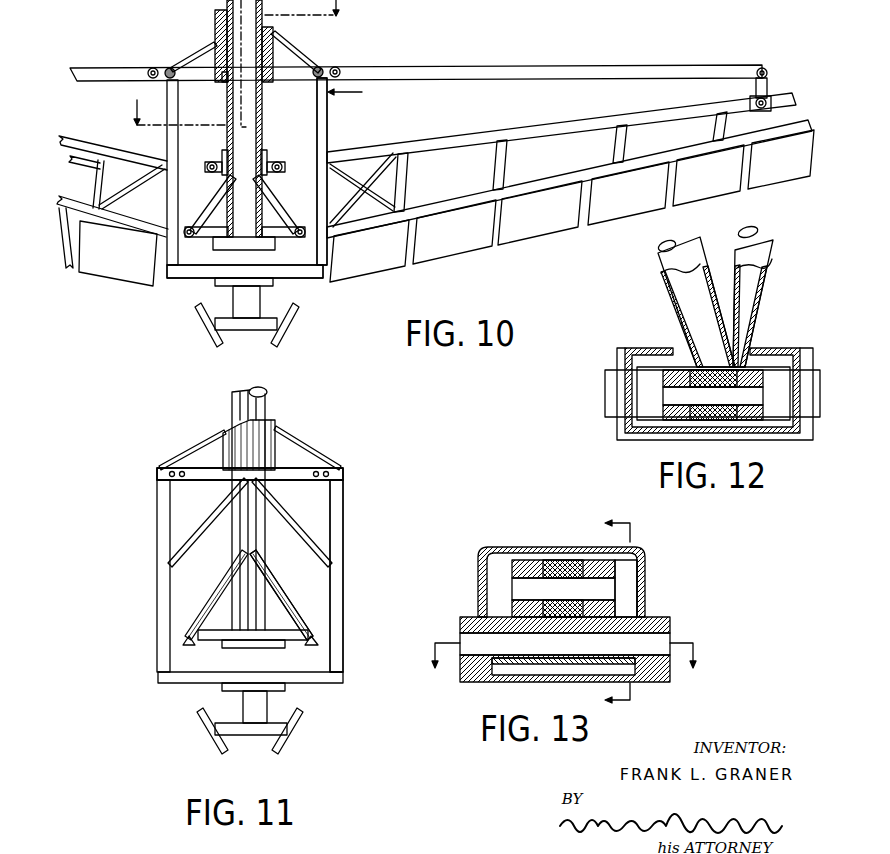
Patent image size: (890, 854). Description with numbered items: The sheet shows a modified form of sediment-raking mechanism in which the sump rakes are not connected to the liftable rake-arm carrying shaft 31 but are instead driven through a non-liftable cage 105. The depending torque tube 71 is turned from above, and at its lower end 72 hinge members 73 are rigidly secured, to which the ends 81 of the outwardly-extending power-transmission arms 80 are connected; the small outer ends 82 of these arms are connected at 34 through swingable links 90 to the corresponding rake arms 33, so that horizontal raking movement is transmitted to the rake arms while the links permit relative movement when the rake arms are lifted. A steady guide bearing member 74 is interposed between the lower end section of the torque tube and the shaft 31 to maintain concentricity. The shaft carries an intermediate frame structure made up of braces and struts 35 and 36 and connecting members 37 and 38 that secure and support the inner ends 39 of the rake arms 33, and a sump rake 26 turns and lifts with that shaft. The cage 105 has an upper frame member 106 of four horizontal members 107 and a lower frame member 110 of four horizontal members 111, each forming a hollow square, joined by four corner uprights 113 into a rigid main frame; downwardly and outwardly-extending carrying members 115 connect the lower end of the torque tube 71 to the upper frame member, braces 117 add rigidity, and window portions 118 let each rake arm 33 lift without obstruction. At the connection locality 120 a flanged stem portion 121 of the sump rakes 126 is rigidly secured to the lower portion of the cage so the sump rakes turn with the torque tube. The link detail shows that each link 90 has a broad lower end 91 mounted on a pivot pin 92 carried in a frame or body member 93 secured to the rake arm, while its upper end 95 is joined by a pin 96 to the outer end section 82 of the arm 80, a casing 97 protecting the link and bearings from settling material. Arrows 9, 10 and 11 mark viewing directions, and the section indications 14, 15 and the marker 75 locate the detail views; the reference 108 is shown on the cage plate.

In FIG. 10, the direction arrows of Figs. 9 and 10 9 is at (237, 62).
In FIG. 10, the direction arrows of Figs. 9 and 10 is at (244, 74).
In FIG. 10, the arrows 11 is at (358, 94).
In FIG. 13, the section line 14- 14 is at (607, 612).
In FIG. 13, the section line 15- 15 is at (567, 666).
In FIG. 10, the sump rake 26 is at (299, 318).
In FIG. 10, the arm-carrying shaft 31 is at (263, 124).
In FIG. 11, the arm-carrying shaft 31 is at (266, 395).
In FIG. 10, the rake arms 33 is at (408, 146).
In FIG. 11, the rake arms 33 is at (311, 600).
In FIG. 10, the connection point 34 is at (748, 106).
In FIG. 10, the braces and struts 35 is at (217, 246).
In FIG. 10, the braces and struts 36 is at (220, 208).
In FIG. 10, the connecting members 37 is at (186, 236).
In FIG. 10, the connecting members 38 is at (221, 158).
In FIG. 11, the inner ends of the rake arms 39 is at (242, 558).
In FIG. 10, the torque tube 71 is at (215, 28).
In FIG. 11, the torque tube 71 is at (277, 430).
In FIG. 10, the lower end of torque tube 72 is at (266, 82).
In FIG. 10, the hinge members 73 is at (166, 69).
In FIG. 10, the steady guide bearing member 74 is at (223, 82).
In FIG. 10, the section line 75 is at (299, 7).
In FIG. 10, the power-transmission arms 80 is at (548, 67).
In FIG. 12, the power-transmission arms 80 is at (768, 290).
In FIG. 10, the ends of power-transmission arms 81 is at (341, 70).
In FIG. 10, the outer ends of power-transmission arms 82 is at (766, 69).
In FIG. 12, the outer ends of power-transmission arms 82 is at (715, 422).
In FIG. 10, the swingable links 90 is at (770, 88).
In FIG. 13, the swingable links 90 is at (484, 580).
In FIG. 13, the lower end of link 91 is at (487, 608).
In FIG. 13, the pivot pin 92 is at (465, 642).
In FIG. 13, the frame or body member 93 is at (478, 681).
In FIG. 13, the upper end of link 95 is at (616, 570).
In FIG. 12, the pin 96 is at (668, 398).
In FIG. 13, the pin 96 is at (517, 592).
In FIG. 12, the casing or covering element 97 is at (778, 350).
In FIG. 13, the casing or covering element 97 is at (646, 598).
In FIG. 10, the non-liftable cage 105 is at (328, 127).
In FIG. 11, the non-liftable cage 105 is at (421, 492).
In FIG. 11, the upper frame member 106 is at (250, 474).
In FIG. 11, the horizontal members 107 is at (302, 480).
In FIG. 11, the cross plate 108 is at (158, 470).
In FIG. 10, the lower frame member 110 is at (321, 277).
In FIG. 10, the horizontal members 111 is at (245, 271).
In FIG. 10, the corner uprights 113 is at (166, 94).
In FIG. 11, the corner uprights 113 is at (157, 528).
In FIG. 10, the carrying members 115 is at (208, 50).
In FIG. 11, the carrying members 115 is at (205, 448).
In FIG. 11, the braces 117 is at (220, 518).
In FIG. 11, the window portions 118 is at (301, 564).
In FIG. 11, the connection locality 120 is at (286, 684).
In FIG. 11, the flanged stem portion 121 is at (224, 685).
In FIG. 11, the sump rakes 126 is at (299, 733).